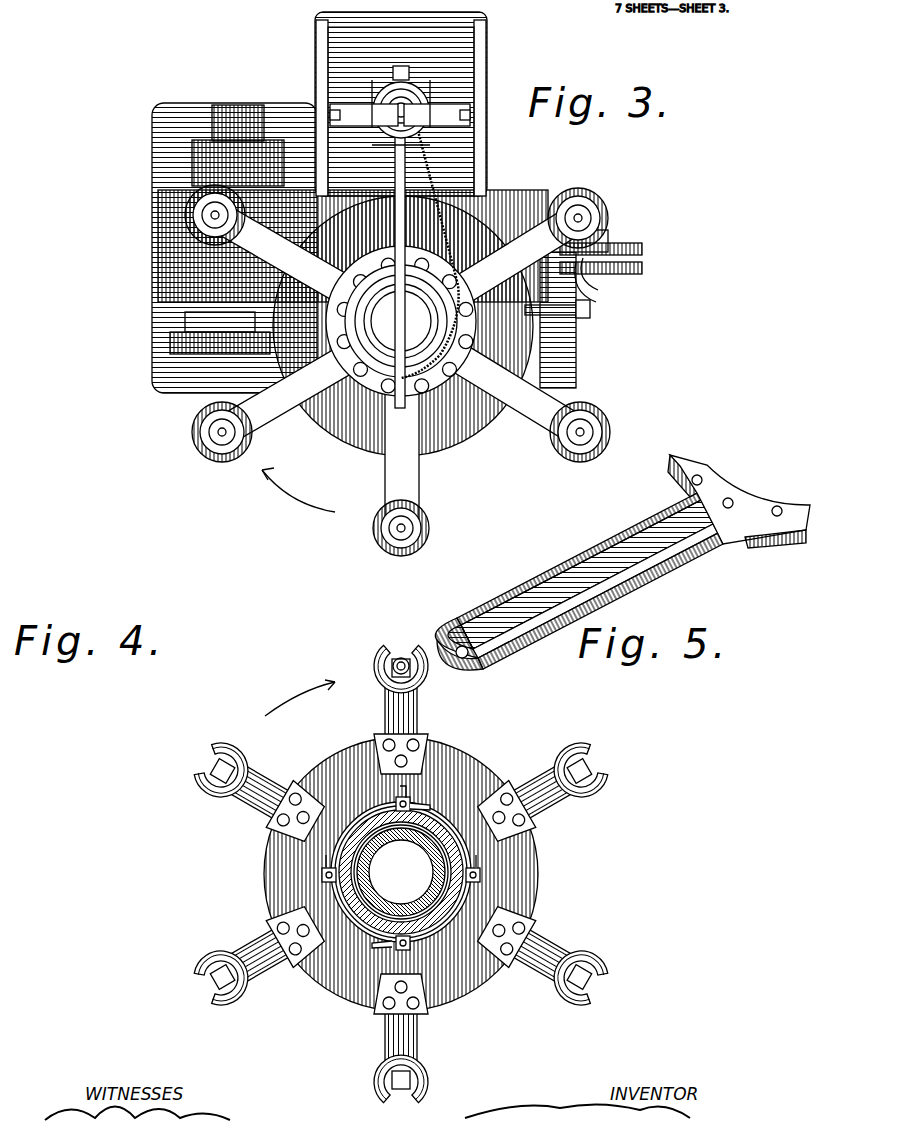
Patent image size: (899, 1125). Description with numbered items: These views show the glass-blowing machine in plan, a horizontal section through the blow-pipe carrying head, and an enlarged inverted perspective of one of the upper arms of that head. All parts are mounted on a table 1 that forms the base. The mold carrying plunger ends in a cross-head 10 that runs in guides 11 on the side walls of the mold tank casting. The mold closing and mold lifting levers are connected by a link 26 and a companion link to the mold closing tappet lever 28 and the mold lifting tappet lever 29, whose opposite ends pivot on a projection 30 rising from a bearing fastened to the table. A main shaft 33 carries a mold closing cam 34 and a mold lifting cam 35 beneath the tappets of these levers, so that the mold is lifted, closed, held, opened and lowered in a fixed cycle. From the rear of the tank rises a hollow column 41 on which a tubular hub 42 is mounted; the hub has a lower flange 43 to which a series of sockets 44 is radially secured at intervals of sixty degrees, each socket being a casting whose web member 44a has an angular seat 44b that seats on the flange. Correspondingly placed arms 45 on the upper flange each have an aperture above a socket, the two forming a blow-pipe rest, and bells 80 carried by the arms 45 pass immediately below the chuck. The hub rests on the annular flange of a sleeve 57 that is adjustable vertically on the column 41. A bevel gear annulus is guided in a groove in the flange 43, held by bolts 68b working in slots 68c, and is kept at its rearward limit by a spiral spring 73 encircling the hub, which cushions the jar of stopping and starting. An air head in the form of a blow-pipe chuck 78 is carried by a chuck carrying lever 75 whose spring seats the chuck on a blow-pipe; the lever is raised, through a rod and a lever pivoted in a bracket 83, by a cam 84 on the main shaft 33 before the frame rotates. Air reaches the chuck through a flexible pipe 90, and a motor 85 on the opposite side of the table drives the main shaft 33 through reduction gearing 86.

In FIG. 3, the table 1 is at (158, 149).
In FIG. 3, the cross-head 10 is at (468, 114).
In FIG. 3, the guides 11 is at (456, 136).
In FIG. 3, the link 26 is at (401, 321).
In FIG. 3, the mold closing tappet lever 28 is at (600, 290).
In FIG. 3, the mold lifting tappet lever 29 is at (598, 301).
In FIG. 3, the projection 30 is at (600, 240).
In FIG. 3, the main shaft 33 is at (576, 360).
In FIG. 3, the mold closing cam 34 is at (643, 250).
In FIG. 3, the mold lifting cam 35 is at (643, 268).
In FIG. 3, the hollow column 41 is at (400, 322).
In FIG. 4, the hollow column 41 is at (401, 872).
In FIG. 3, the tubular hub 42 is at (446, 372).
In FIG. 4, the tubular hub 42 is at (461, 849).
In FIG. 3, the lower flange 43 is at (450, 445).
In FIG. 4, the lower flange 43 is at (540, 858).
In FIG. 4, the sockets 44 is at (387, 681).
In FIG. 4, the web member 44a is at (420, 710).
In FIG. 4, the angular seat 44b is at (426, 762).
In FIG. 3, the arms 45 is at (283, 425).
In FIG. 5, the arms 45 is at (620, 540).
In FIG. 3, the sleeve 57 is at (387, 321).
In FIG. 4, the sleeve 57 is at (401, 660).
In FIG. 4, the bolts 68b is at (398, 800).
In FIG. 4, the slots 68c is at (438, 808).
In FIG. 4, the spiral spring 73 is at (356, 830).
In FIG. 3, the frame portion 75 is at (348, 236).
In FIG. 3, the blow-pipe chuck 78 is at (447, 101).
In FIG. 3, the bells 80 is at (200, 433).
In FIG. 3, the bracket 83 is at (573, 312).
In FIG. 3, the cam 84 is at (590, 312).
In FIG. 3, the motor 85 is at (165, 228).
In FIG. 3, the reduction gearing 86 is at (175, 354).
In FIG. 3, the flexible pipe 90 is at (456, 271).